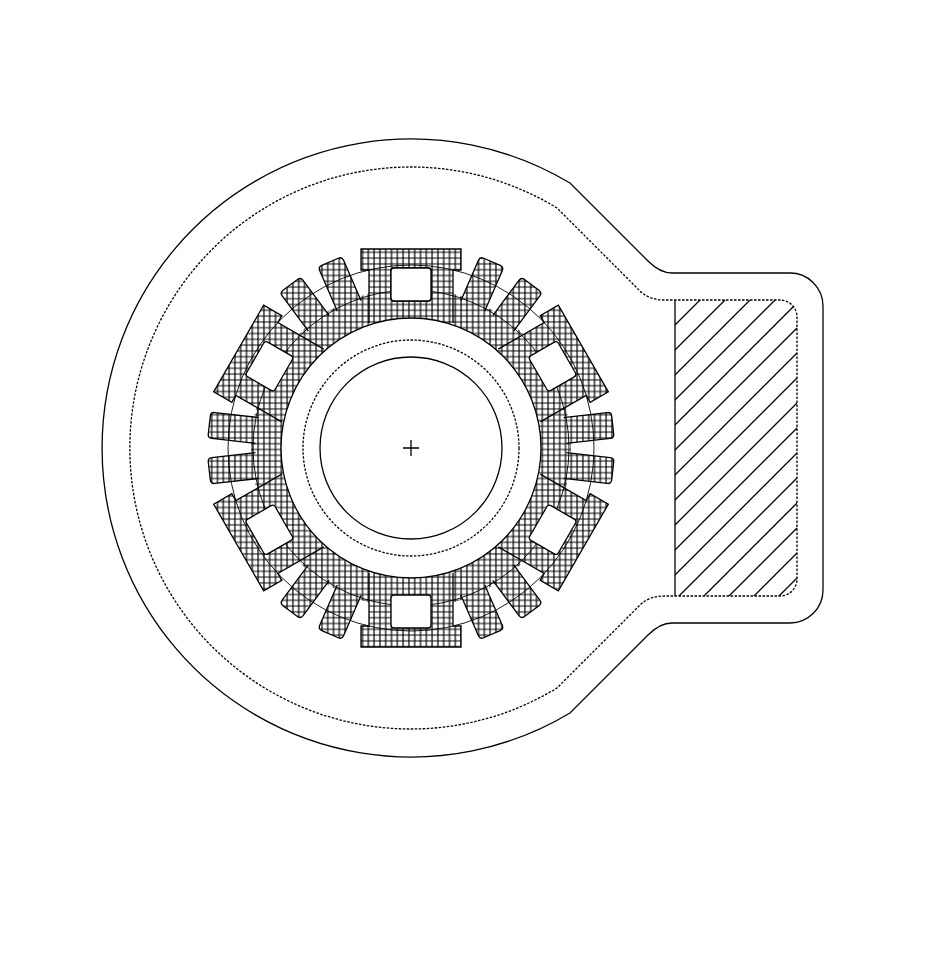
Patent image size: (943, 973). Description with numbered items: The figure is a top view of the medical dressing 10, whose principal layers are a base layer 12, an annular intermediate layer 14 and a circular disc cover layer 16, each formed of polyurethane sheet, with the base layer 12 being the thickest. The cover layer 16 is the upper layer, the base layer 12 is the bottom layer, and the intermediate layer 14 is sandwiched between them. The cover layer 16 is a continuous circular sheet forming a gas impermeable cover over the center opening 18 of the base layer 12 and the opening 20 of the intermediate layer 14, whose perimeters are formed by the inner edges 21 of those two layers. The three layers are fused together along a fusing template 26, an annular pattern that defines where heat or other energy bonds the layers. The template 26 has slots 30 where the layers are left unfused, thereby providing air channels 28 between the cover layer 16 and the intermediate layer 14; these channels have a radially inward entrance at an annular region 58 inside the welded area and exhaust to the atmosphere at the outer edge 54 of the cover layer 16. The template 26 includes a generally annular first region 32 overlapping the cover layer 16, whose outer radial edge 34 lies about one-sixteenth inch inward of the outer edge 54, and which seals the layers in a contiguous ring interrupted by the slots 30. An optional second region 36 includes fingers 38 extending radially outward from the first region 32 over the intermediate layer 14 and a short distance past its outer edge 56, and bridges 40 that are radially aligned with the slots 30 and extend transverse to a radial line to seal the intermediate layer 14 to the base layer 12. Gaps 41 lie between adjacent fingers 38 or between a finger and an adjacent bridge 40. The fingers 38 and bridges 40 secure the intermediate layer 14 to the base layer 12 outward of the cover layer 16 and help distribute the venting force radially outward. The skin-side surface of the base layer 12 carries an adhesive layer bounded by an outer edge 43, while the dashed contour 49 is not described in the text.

The medical dressing 10 is at (473, 100).
The base layer 12 is at (288, 722).
The annular intermediate layer 14 is at (390, 430).
The circular disc cover layer 16 is at (414, 592).
The center opening 18 is at (437, 410).
The opening 20 is at (411, 448).
The inner edges 21 is at (337, 505).
The fusing template 26 is at (265, 572).
The air channels 28 is at (415, 298).
The slots 30 is at (428, 308).
The first region 32 is at (498, 305).
The outer radial edge 34 is at (552, 325).
The second region 36 is at (315, 274).
The fingers 38 is at (298, 282).
The bridges 40 is at (252, 318).
The gaps 41 is at (530, 585).
The outer edge 43 is at (312, 392).
The inner housing wall 49 is at (146, 543).
The outer edge 54 is at (583, 342).
The outer edge 56 is at (466, 278).
The annular region 58 is at (485, 560).